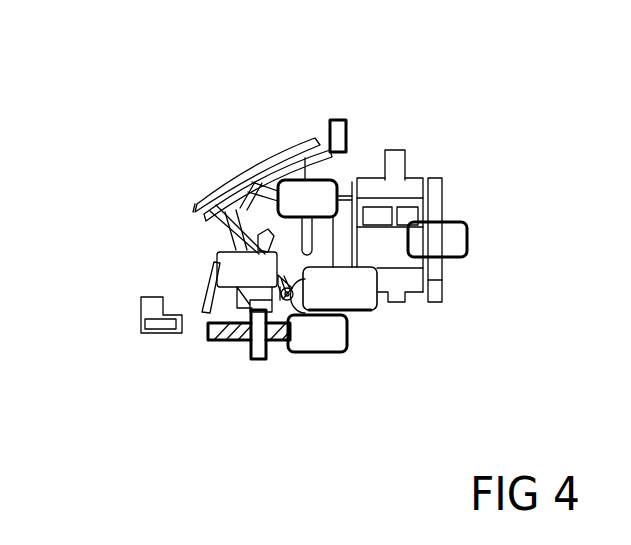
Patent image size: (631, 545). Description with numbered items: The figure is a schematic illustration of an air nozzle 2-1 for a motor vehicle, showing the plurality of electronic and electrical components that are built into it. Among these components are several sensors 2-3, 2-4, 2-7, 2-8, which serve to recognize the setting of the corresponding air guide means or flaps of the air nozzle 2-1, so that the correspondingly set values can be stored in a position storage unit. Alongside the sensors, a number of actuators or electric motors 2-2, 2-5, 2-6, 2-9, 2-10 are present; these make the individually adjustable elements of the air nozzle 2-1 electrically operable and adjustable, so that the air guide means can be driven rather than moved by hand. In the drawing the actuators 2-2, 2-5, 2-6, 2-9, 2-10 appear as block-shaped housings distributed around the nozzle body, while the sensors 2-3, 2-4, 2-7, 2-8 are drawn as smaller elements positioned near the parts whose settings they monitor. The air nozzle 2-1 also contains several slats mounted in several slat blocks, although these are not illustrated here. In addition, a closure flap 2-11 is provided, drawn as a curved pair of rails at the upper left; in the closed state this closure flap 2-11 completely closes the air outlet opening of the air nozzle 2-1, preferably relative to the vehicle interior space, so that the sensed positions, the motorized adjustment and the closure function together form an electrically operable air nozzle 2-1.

The air nozzle 2-1 is at (440, 197).
The actuator or electric motor 2-2 is at (317, 335).
The sensor 2-3 is at (138, 313).
The sensor 2-4 is at (160, 337).
The actuator or electric motor 2-5 is at (355, 297).
The actuator or electric motor 2-6 is at (432, 243).
The sensor 2-7 is at (340, 120).
The sensor 2-8 is at (392, 165).
The actuator or electric motor 2-9 is at (300, 195).
The actuator or electric motor 2-10 is at (217, 267).
The closure flap 2-11 is at (218, 192).